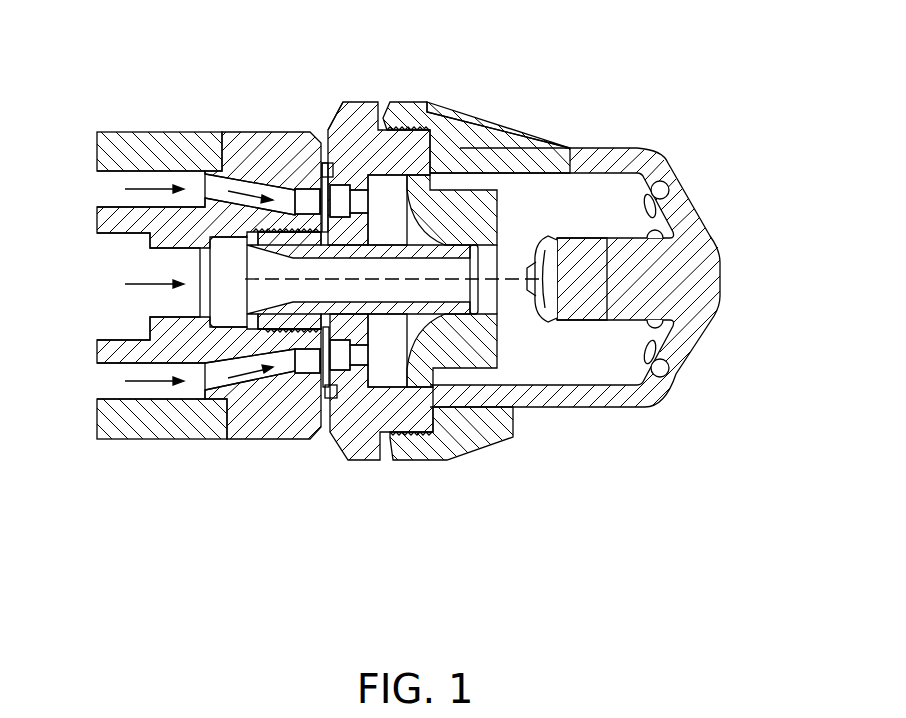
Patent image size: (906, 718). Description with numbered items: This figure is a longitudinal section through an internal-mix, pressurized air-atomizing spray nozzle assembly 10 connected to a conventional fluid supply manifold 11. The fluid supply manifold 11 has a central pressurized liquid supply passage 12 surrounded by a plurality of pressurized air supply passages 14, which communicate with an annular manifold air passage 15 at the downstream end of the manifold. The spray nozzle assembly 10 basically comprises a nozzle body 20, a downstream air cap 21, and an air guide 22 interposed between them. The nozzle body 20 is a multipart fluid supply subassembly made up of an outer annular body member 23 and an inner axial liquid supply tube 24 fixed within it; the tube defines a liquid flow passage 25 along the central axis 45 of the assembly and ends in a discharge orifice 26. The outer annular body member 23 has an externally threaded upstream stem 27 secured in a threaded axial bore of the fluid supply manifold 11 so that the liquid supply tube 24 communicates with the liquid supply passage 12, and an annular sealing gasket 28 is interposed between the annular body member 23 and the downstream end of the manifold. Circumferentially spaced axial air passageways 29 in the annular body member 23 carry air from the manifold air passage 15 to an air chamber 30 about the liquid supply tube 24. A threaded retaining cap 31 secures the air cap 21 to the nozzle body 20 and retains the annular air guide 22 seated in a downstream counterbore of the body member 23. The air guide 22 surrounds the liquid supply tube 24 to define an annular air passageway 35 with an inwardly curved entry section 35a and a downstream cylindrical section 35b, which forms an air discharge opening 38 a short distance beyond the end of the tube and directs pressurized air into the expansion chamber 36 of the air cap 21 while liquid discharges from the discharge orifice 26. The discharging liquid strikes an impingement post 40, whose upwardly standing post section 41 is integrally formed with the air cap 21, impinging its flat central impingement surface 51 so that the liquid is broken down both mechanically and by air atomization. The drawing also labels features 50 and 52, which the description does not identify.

The spray nozzle assembly 10 is at (510, 110).
The fluid supply manifold 11 is at (150, 127).
The liquid supply passage 12 is at (105, 290).
The air supply passages 14 is at (112, 197).
The annular manifold air passage 15 is at (307, 195).
The nozzle body 20 is at (368, 92).
The air cap 21 is at (633, 145).
The air guide 22 is at (452, 183).
The outer annular body member 23 is at (341, 113).
The liquid supply tube 24 is at (515, 142).
The liquid flow passage 25 is at (343, 292).
The discharge orifice 26 is at (487, 300).
The upstream stem 27 is at (267, 222).
The annular sealing gasket 28 is at (332, 292).
The axial air passageways 29 is at (360, 200).
The air chamber 30 is at (377, 437).
The threaded retaining cap 31 is at (415, 95).
The annular air passageway 35 is at (438, 332).
The entry section 35a is at (404, 330).
The cylindrical section 35b is at (447, 332).
The expansion chamber 36 is at (630, 372).
The air discharge opening 38 is at (513, 277).
The impingement post 40 is at (613, 232).
The post section 41 is at (657, 348).
The central axis 45 is at (578, 150).
The seal 50 is at (553, 322).
The impingement surface 51 is at (532, 300).
The deflector body 52 is at (600, 263).